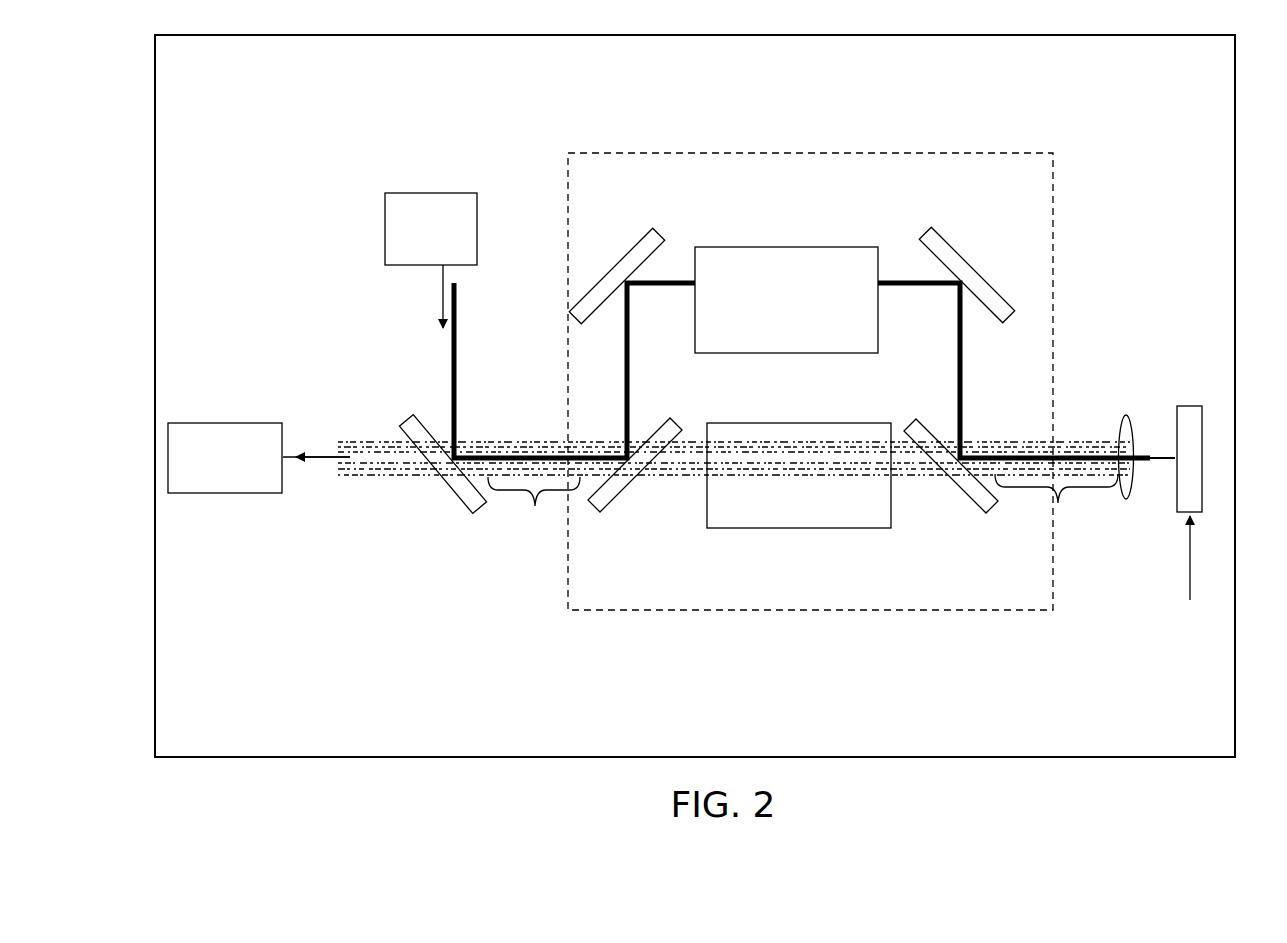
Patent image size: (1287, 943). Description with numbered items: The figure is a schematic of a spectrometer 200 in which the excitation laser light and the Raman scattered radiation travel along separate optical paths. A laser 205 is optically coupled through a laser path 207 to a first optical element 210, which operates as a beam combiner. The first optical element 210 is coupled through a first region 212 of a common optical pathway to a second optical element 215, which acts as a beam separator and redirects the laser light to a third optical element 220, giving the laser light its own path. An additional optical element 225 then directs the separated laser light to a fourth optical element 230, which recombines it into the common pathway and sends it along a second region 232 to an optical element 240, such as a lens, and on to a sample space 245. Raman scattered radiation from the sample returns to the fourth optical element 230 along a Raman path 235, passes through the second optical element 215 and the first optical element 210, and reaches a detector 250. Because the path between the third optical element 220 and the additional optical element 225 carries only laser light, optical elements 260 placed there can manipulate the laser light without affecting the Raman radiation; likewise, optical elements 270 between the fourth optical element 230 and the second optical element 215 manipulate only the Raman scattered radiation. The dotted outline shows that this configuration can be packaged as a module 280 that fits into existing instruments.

The spectrometer 200 is at (287, 764).
The laser 205 is at (443, 200).
The laser path 207 is at (458, 400).
The first optical element 210 is at (408, 421).
The first region of common optical pathway 212 is at (534, 511).
The second optical element 215 is at (627, 483).
The third optical element 220 is at (638, 246).
The additional optical element 225 is at (946, 246).
The fourth optical element 230 is at (972, 486).
The second region of common optical pathway 232 is at (1056, 507).
The Raman path 235 is at (1030, 438).
The optical element 240 is at (1126, 428).
The sample space 245 is at (1187, 520).
The detector 250 is at (214, 423).
The optical elements for manipulation of the laser light 260 is at (728, 247).
The optical elements for manipulation of the Raman light 270 is at (798, 517).
The module 280 is at (846, 611).